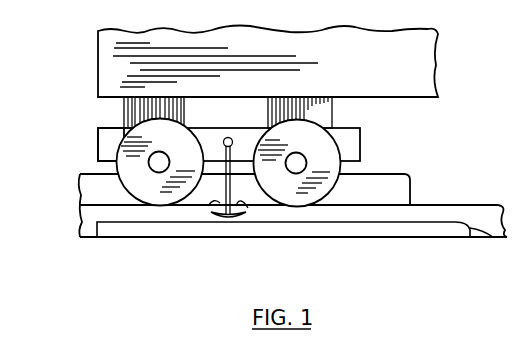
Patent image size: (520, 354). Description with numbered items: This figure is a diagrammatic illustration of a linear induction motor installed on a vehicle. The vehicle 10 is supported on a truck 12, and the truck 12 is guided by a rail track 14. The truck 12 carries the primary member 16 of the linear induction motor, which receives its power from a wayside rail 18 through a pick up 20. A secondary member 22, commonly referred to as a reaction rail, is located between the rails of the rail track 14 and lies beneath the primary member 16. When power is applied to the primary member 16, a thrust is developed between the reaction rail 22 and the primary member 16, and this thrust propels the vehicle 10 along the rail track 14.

The vehicle 10 is at (85, 72).
The truck 12 is at (372, 145).
The rail track 14 is at (495, 238).
The primary member 16 is at (97, 144).
The wayside rail 18 is at (138, 235).
The pick up 20 is at (244, 211).
The secondary member 22 is at (415, 192).